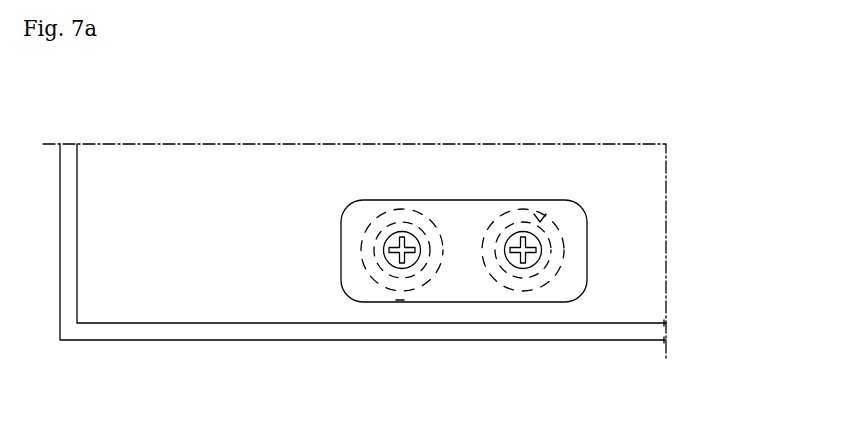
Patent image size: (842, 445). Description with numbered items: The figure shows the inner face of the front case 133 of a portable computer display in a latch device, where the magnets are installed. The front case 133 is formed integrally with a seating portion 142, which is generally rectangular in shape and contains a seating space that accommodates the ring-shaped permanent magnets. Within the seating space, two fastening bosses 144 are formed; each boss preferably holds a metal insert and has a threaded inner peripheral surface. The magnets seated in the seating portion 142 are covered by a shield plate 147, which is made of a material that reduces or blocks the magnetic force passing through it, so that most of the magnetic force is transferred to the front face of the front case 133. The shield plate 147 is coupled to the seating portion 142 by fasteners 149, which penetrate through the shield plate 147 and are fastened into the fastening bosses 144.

The front case 133 is at (522, 333).
The seating portion 142 is at (400, 300).
The fastening boss 144 is at (545, 203).
The shield plate 147 is at (466, 200).
The fastener 149 is at (543, 245).